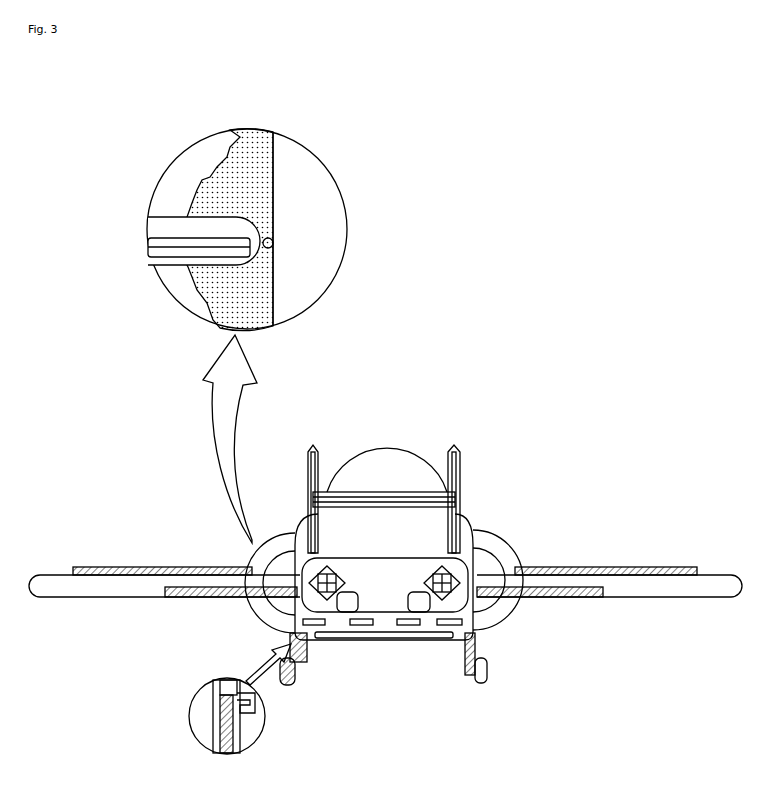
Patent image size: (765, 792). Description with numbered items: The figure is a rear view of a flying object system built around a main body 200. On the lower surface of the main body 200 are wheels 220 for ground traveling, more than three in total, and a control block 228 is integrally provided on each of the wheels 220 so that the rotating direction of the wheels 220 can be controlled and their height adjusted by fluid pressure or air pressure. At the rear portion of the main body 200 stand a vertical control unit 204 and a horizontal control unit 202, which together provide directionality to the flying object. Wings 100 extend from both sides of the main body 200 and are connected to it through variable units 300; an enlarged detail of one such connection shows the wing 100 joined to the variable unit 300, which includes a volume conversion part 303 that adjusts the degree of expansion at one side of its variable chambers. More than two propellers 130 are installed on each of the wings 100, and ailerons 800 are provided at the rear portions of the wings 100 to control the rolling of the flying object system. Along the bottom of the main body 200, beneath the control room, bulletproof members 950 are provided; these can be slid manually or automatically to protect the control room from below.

The wing 100 is at (157, 226).
The propeller 130 is at (118, 566).
The main body 200 is at (465, 516).
The horizontal control unit 202 is at (461, 460).
The vertical control unit 204 is at (325, 493).
The wheel 220 is at (277, 153).
The control block 228 is at (465, 655).
The variable unit 300 is at (223, 195).
The volume conversion part 303 is at (230, 150).
The aileron 800 is at (560, 597).
The bulletproof member 950 is at (357, 638).